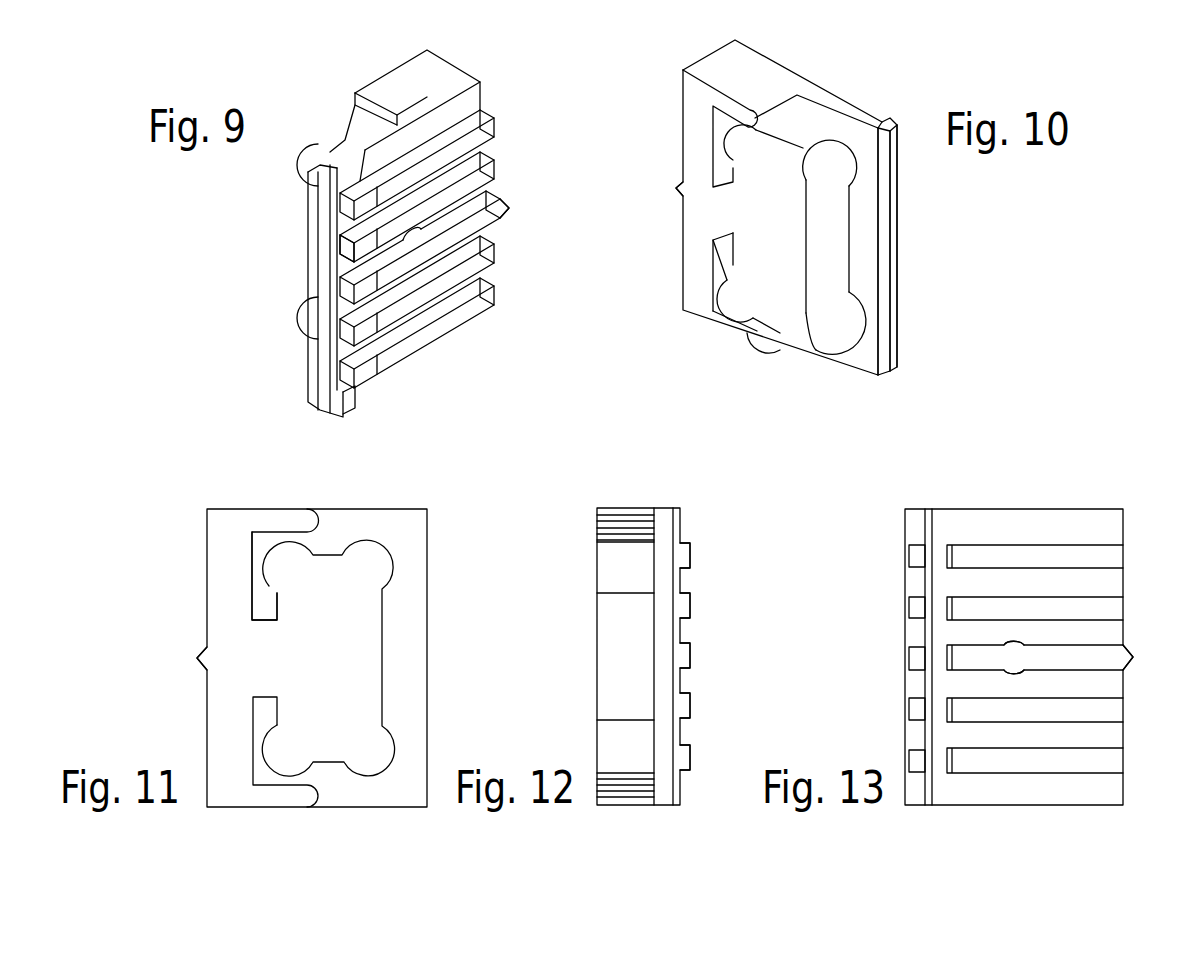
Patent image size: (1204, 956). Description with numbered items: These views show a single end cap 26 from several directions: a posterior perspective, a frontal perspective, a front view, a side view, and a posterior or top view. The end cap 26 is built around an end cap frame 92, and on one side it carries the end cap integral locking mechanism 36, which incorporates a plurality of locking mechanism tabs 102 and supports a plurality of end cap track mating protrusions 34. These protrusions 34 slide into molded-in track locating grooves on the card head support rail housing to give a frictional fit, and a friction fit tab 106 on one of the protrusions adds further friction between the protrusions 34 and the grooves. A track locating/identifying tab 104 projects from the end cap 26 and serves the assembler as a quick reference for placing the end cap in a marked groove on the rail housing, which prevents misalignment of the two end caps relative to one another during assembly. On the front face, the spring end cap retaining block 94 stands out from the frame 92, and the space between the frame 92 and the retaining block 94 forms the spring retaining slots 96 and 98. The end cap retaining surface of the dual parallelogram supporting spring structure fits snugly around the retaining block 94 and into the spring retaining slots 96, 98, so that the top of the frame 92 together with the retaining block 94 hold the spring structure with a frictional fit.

In FIG. 9, the end cap 26 is at (241, 265).
In FIG. 10, the end cap 26 is at (665, 80).
In FIG. 11, the end cap 26 is at (160, 541).
In FIG. 12, the end cap 26 is at (566, 541).
In FIG. 13, the end cap 26 is at (881, 551).
In FIG. 9, the end cap track mating protrusions 34 is at (488, 130).
In FIG. 12, the end cap track mating protrusions 34 is at (685, 610).
In FIG. 13, the end cap track mating protrusions 34 is at (1100, 556).
In FIG. 9, the end cap integral locking mechanism 36 is at (328, 175).
In FIG. 10, the end cap integral locking mechanism 36 is at (858, 117).
In FIG. 12, the end cap integral locking mechanism 36 is at (663, 508).
In FIG. 13, the end cap integral locking mechanism 36 is at (907, 508).
In FIG. 9, the end cap frame 92 is at (422, 65).
In FIG. 11, the end cap frame 92 is at (233, 507).
In FIG. 12, the end cap frame 92 is at (627, 508).
In FIG. 9, the spring end cap retaining block 94 is at (310, 163).
In FIG. 10, the spring end cap retaining block 94 is at (770, 228).
In FIG. 11, the spring end cap retaining block 94 is at (325, 640).
In FIG. 12, the spring end cap retaining block 94 is at (625, 643).
In FIG. 10, the spring retaining slot 96 is at (715, 130).
In FIG. 11, the spring retaining slot 96 is at (252, 572).
In FIG. 10, the spring retaining slot 98 is at (720, 290).
In FIG. 11, the spring retaining slot 98 is at (255, 740).
In FIG. 9, the locking mechanism tabs 102 is at (345, 252).
In FIG. 13, the locking mechanism tabs 102 is at (918, 583).
In FIG. 9, the track locating/identifying tab 104 is at (503, 208).
In FIG. 10, the track locating/identifying tab 104 is at (680, 187).
In FIG. 11, the track locating/identifying tab 104 is at (198, 658).
In FIG. 13, the track locating/identifying tab 104 is at (1134, 661).
In FIG. 9, the friction fit tab 106 is at (420, 238).
In FIG. 13, the friction fit tab 106 is at (1004, 648).